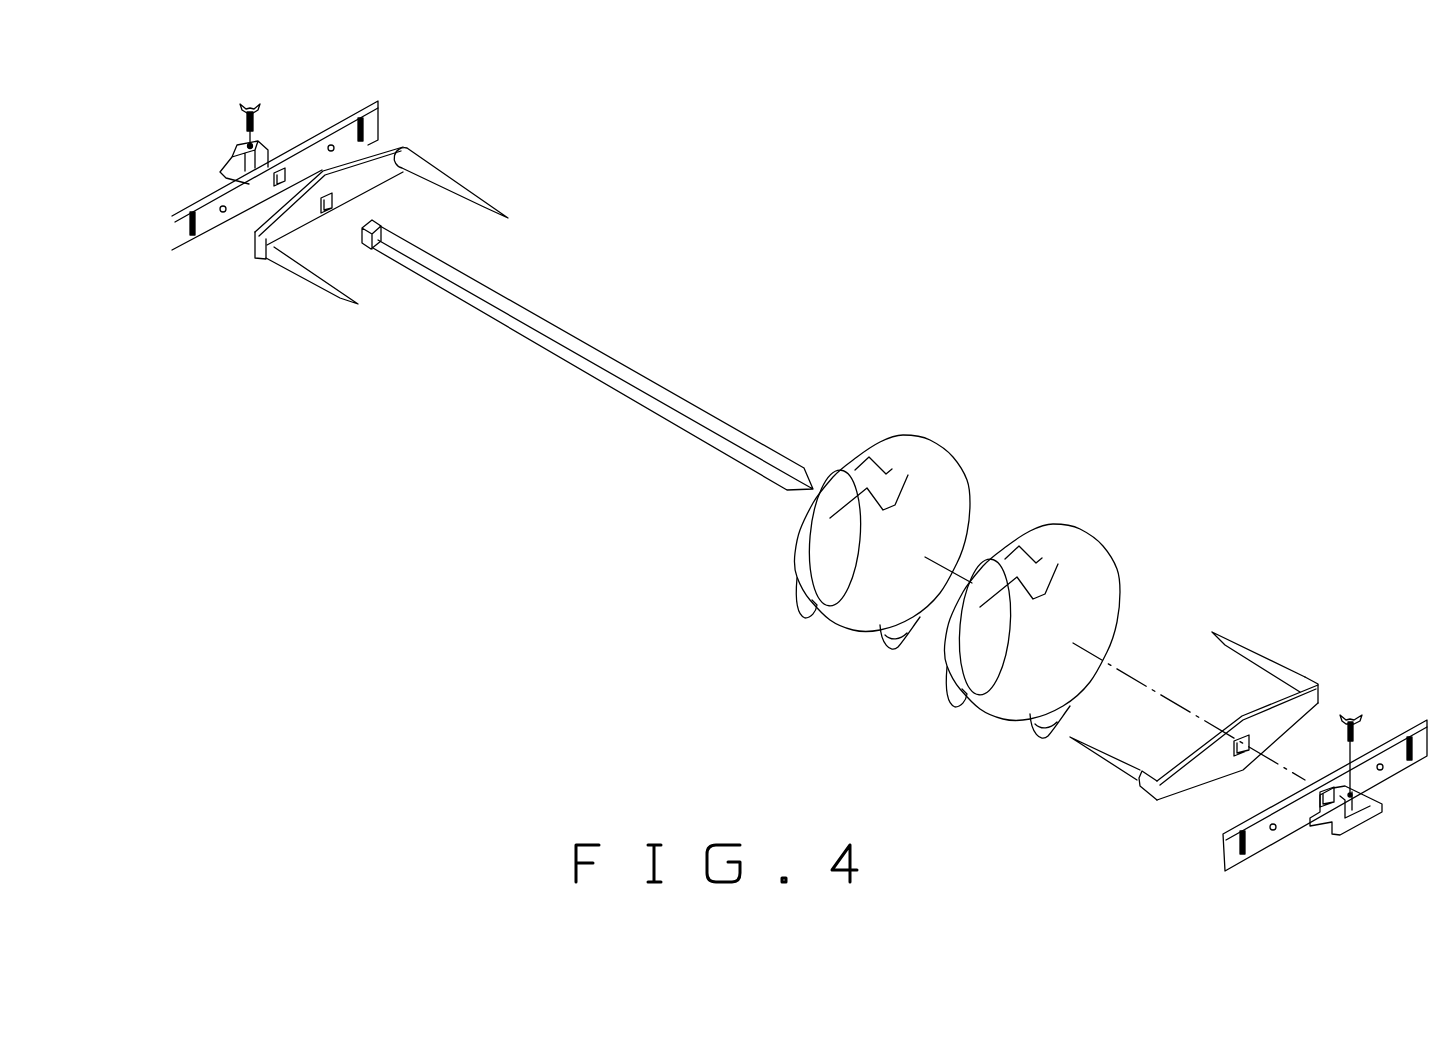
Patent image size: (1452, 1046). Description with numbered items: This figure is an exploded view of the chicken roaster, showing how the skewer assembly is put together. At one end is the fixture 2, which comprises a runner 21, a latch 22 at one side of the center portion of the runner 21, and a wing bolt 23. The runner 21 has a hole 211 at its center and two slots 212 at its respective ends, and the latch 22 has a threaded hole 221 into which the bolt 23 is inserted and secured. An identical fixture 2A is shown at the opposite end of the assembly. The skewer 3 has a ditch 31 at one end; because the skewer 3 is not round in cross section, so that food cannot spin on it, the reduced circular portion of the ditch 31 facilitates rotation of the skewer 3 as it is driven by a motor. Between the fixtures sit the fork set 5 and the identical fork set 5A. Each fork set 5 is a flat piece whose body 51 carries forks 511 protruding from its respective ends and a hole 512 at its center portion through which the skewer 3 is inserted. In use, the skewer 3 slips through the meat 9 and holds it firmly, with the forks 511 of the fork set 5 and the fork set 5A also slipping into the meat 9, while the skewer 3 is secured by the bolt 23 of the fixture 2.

The fixture 2 is at (314, 194).
The runner 21 is at (242, 188).
The hole 211 is at (283, 172).
The slots 212 is at (364, 129).
The latch 22 is at (227, 115).
The threaded hole 221 is at (250, 146).
The wing bolt 23 is at (243, 120).
The skewer 3 is at (587, 355).
The ditch 31 is at (373, 249).
The fork set 5 is at (451, 296).
The holder body 51 is at (287, 225).
The forks 511 is at (482, 207).
The hole 512 is at (323, 215).
The meat 9 is at (977, 715).
The fork set 5A is at (1147, 788).
The fixture 2A is at (1330, 833).